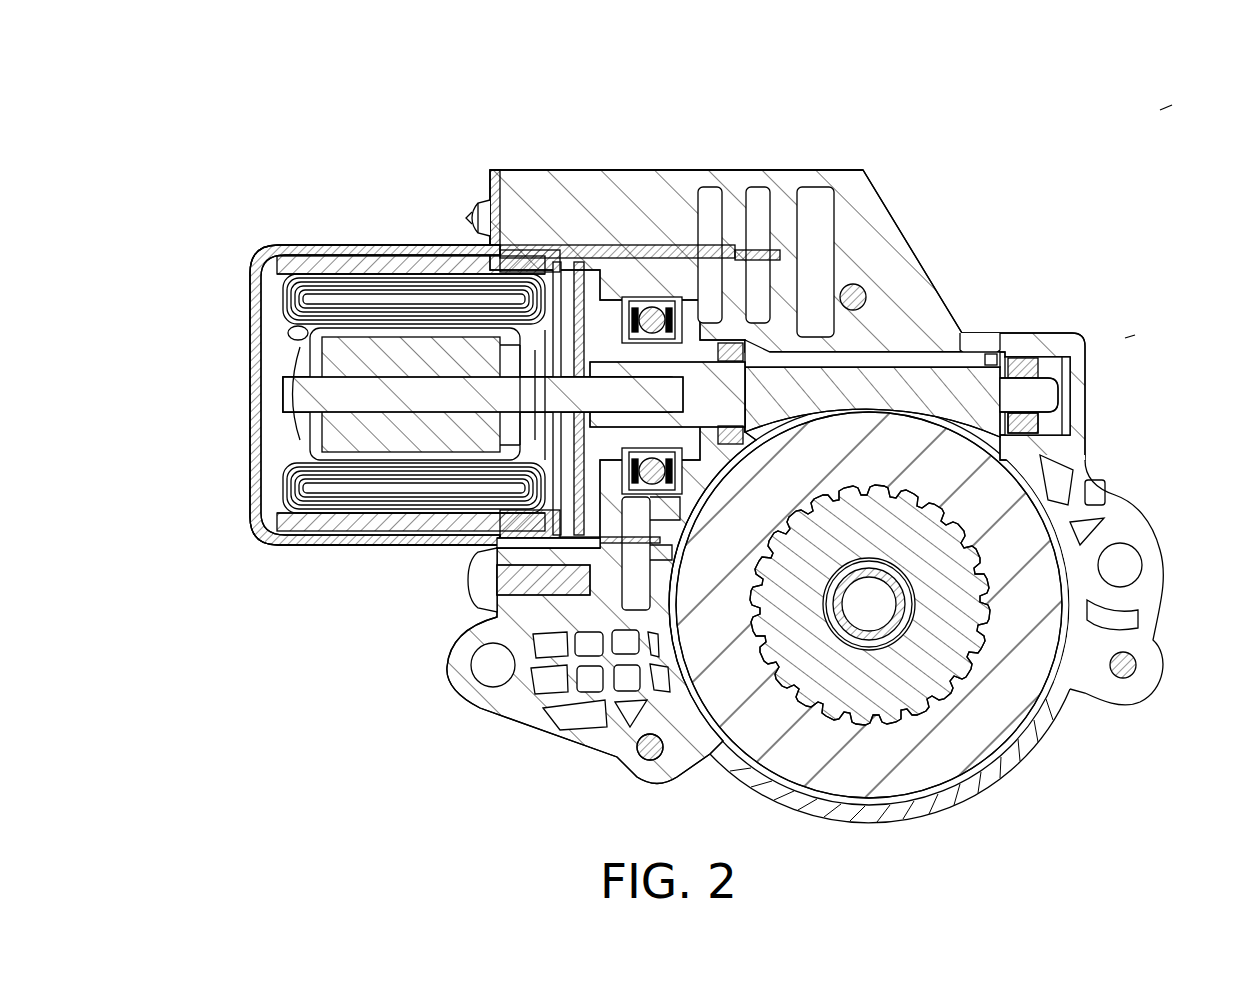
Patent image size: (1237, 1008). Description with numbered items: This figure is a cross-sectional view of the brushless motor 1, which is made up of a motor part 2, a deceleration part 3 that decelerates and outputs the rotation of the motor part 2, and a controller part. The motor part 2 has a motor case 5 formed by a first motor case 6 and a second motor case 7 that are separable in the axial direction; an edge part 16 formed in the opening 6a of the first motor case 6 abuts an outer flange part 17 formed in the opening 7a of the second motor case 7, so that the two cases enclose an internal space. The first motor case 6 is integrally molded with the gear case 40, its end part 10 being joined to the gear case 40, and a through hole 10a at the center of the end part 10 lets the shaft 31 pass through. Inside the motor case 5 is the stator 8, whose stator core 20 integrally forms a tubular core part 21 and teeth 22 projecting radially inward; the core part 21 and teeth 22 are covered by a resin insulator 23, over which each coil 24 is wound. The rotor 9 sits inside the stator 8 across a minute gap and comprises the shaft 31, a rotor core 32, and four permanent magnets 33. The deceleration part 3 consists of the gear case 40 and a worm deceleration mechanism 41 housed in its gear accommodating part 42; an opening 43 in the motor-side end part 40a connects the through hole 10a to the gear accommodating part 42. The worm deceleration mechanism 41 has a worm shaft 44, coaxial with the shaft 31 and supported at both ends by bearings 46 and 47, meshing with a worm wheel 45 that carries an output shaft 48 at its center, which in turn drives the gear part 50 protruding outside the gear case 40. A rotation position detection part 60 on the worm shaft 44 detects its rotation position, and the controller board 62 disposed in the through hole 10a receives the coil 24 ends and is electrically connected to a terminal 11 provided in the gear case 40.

The brushless motor 1 is at (1172, 105).
The motor part 2 is at (243, 243).
The deceleration part 3 is at (1135, 335).
The motor case 5 is at (460, 62).
The first motor case 6 is at (490, 170).
The opening 6a is at (472, 222).
The second motor case 7 is at (360, 245).
The opening 7a is at (522, 248).
The stator 8 is at (300, 258).
The rotor 9 is at (300, 335).
The end part 10 is at (617, 170).
The through hole 10a is at (579, 262).
The terminal 11 is at (783, 330).
The edge part 16 is at (473, 190).
The outer flange part 17 is at (490, 180).
The stator core 20 is at (326, 419).
The core part 21 is at (320, 520).
The teeth 22 is at (340, 477).
The insulator 23 is at (300, 325).
The coil 24 is at (300, 288).
The shaft 31 is at (310, 395).
The rotor core 32 is at (330, 432).
The permanent magnets 33 is at (320, 362).
The gear case 40 is at (1082, 337).
The end part 40a is at (497, 560).
The worm deceleration mechanism 41 is at (1185, 385).
The gear accommodating part 42 is at (978, 352).
The opening 43 is at (623, 298).
The worm shaft 44 is at (1035, 395).
The worm wheel 45 is at (1025, 433).
The bearing 46 is at (720, 345).
The bearing 47 is at (1022, 365).
The output shaft 48 is at (868, 685).
The gear part 50 is at (840, 640).
The rotation position detection part 60 is at (745, 345).
The controller board 62 is at (500, 528).